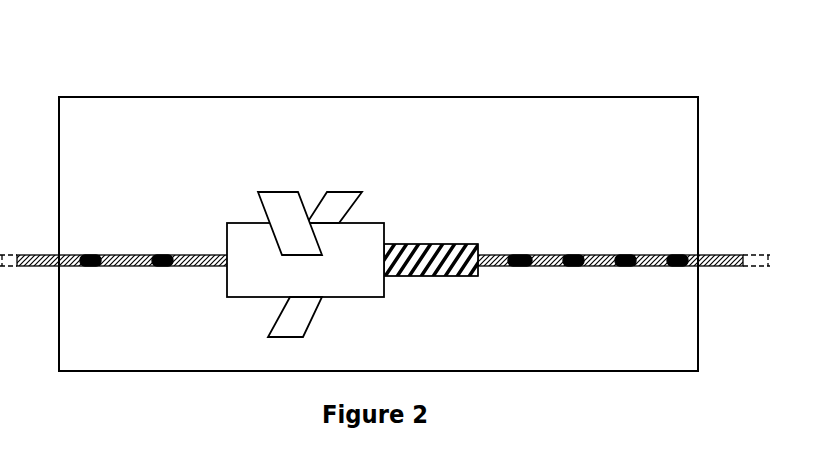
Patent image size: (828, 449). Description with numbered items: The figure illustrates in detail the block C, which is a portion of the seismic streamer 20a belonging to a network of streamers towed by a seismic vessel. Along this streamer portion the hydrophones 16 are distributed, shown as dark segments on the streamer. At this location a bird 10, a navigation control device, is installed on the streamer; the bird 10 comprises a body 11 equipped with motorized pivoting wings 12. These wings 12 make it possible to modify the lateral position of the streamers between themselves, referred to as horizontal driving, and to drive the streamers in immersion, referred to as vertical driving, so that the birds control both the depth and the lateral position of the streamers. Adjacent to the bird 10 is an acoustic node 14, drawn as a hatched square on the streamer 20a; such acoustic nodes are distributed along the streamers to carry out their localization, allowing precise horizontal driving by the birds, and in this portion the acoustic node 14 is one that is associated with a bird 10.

The block C is at (552, 97).
The bird 10 is at (275, 228).
The body 11 is at (238, 285).
The motorized pivoting wings 12 is at (277, 200).
The acoustic node 14 is at (437, 265).
The hydrophones 16 is at (572, 255).
The seismic streamer 20a is at (388, 224).